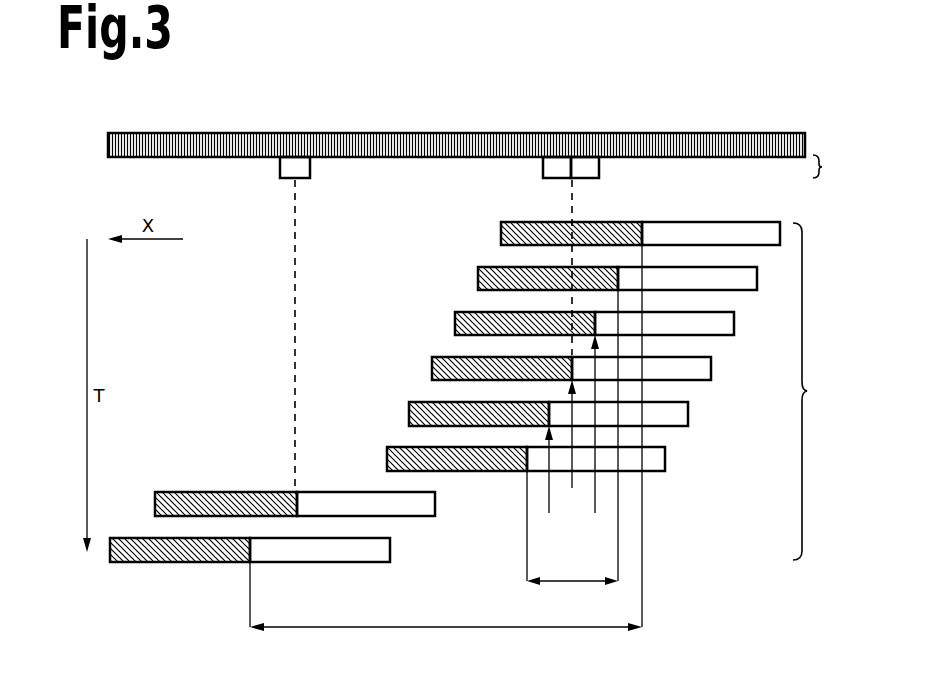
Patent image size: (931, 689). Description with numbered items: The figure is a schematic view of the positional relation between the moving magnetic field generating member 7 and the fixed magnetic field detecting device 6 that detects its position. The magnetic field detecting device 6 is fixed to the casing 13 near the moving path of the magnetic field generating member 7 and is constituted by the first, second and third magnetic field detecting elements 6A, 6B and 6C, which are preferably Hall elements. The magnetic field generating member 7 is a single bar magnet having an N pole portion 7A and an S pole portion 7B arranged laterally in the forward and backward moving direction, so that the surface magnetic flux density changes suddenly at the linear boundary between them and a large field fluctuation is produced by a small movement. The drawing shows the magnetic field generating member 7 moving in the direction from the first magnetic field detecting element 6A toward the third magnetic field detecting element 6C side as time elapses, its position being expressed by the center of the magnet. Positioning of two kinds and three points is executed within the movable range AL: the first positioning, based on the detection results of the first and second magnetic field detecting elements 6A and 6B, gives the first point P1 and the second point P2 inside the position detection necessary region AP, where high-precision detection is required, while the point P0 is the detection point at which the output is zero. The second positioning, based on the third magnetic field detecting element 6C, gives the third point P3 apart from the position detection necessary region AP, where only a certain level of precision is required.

The casing 13 is at (717, 131).
The magnetic field detecting device 6 is at (827, 167).
The first magnetic field detecting element 6A is at (592, 166).
The second magnetic field detecting element 6B is at (548, 166).
The third magnetic field detecting element 6C is at (297, 166).
The magnetic field generating member 7 is at (467, 374).
The N pole portion 7A is at (722, 232).
The S pole portion 7B is at (543, 231).
The point P0 is at (572, 447).
The first point P1 is at (595, 435).
The second point P2 is at (549, 481).
The third point P3 is at (284, 483).
The position detection necessary region AP is at (572, 572).
The movable range AL is at (446, 616).